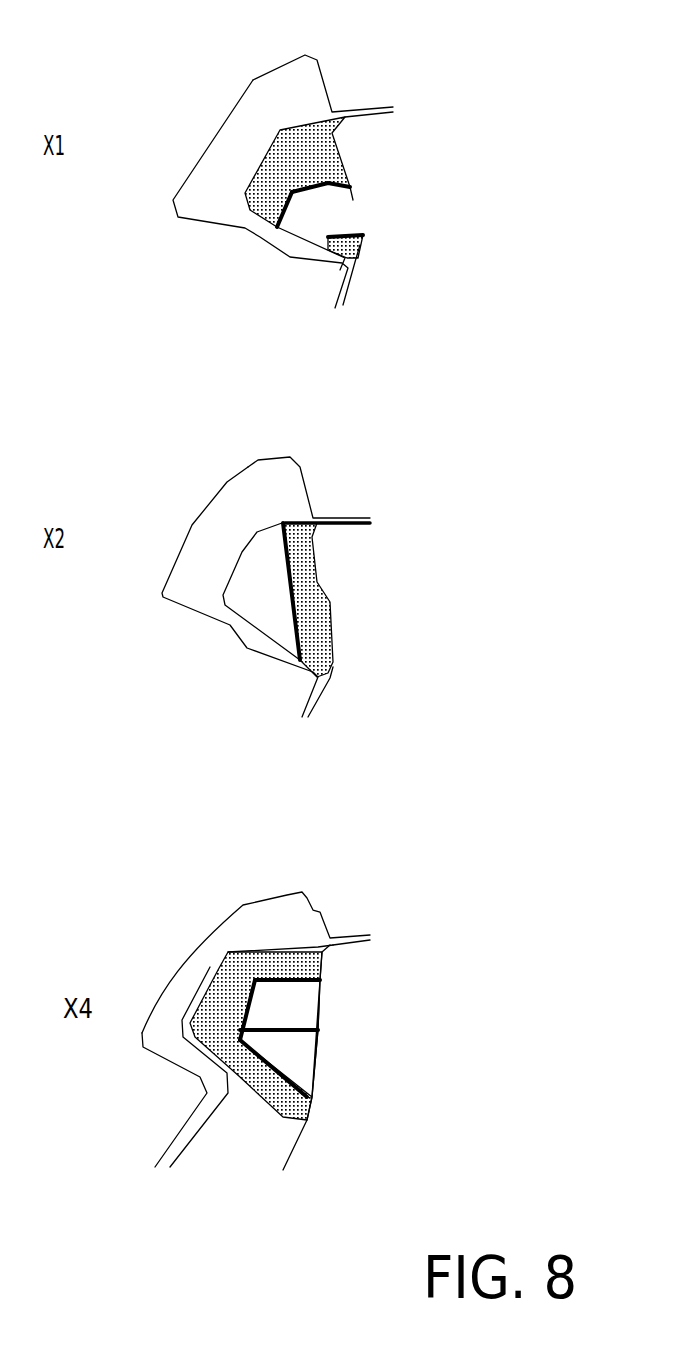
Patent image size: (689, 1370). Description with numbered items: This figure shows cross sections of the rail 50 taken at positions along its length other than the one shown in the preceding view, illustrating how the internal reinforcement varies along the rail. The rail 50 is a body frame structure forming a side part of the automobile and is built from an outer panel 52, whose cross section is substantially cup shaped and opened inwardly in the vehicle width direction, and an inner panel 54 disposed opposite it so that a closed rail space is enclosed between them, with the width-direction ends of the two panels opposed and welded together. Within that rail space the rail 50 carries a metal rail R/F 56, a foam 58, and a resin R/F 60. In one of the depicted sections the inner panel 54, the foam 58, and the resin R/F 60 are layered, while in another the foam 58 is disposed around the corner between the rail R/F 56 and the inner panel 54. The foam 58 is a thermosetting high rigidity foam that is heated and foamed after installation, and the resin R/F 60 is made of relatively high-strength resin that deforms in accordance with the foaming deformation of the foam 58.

The rail 50 is at (208, 97).
The outer panel 52 is at (268, 72).
The inner panel 54 is at (353, 192).
The rail R/F 56 is at (265, 158).
The foam 58 is at (328, 170).
The resin R/F 60 is at (357, 217).